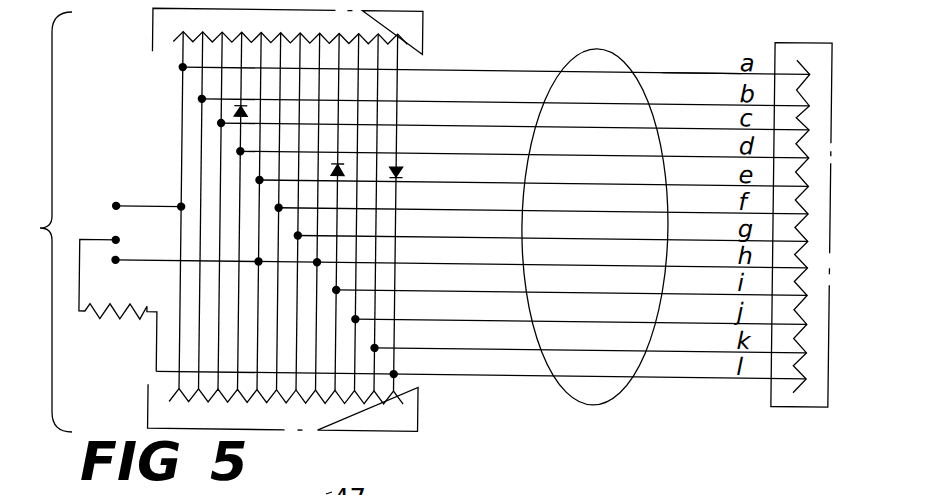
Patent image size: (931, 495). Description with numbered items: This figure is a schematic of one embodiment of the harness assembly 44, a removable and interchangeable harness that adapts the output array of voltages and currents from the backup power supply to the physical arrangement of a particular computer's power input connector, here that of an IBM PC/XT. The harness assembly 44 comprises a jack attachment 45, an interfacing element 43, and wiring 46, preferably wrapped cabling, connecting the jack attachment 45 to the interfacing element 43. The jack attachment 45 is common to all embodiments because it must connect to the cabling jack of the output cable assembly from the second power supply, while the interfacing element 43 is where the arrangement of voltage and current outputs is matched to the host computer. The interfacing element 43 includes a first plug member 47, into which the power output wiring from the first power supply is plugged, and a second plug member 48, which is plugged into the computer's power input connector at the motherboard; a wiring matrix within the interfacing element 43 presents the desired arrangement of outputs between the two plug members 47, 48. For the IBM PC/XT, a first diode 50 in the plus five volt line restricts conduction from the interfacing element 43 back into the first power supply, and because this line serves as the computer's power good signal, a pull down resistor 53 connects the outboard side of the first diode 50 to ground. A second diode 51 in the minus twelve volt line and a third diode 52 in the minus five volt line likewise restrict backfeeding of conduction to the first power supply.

The interfacing element 43 is at (95, 222).
The harness assembly 44 is at (540, 44).
The jack attachment 45 is at (782, 401).
The wiring 46 is at (610, 394).
The first plug member 47 is at (426, 41).
The second plug member 48 is at (420, 412).
The first diode 50 is at (406, 171).
The second diode 51 is at (346, 175).
The third diode 52 is at (231, 108).
The pull down resistor 53 is at (106, 316).